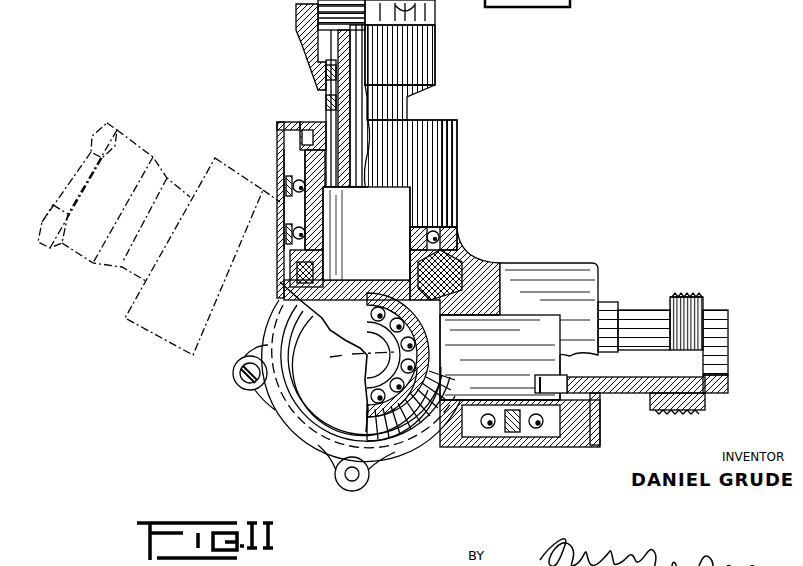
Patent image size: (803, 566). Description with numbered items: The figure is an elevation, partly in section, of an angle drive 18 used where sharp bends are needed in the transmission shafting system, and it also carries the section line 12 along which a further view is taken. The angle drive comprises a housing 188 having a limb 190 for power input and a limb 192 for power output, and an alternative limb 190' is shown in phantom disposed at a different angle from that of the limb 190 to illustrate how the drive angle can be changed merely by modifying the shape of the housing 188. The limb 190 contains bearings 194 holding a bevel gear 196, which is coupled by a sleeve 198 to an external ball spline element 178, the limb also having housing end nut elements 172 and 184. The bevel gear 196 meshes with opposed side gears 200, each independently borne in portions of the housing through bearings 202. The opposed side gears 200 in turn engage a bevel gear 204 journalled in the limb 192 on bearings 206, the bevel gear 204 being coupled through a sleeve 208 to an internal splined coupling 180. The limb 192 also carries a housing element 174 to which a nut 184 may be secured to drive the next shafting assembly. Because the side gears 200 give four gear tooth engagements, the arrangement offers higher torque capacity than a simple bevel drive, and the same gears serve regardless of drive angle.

The section line 12- 12 is at (232, 378).
The angle drive 18 is at (481, 175).
The housing end nut element 172 is at (407, 100).
The housing element 174 is at (632, 308).
The external ball spline element 178 is at (312, 50).
The internal splined coupling 180 is at (714, 309).
The nut 184 is at (420, 50).
The housing 188 is at (465, 258).
The limb 190 is at (435, 171).
The alternative limb 190' is at (159, 239).
The limb 192 is at (572, 265).
The bearings 194 is at (292, 233).
The bevel gear 196 is at (313, 273).
The sleeve 198 is at (328, 110).
The side gears 200 is at (390, 447).
The bearings 202 is at (402, 388).
The bevel gear 204 is at (465, 447).
The bearings 206 is at (522, 437).
The sleeve 208 is at (578, 392).